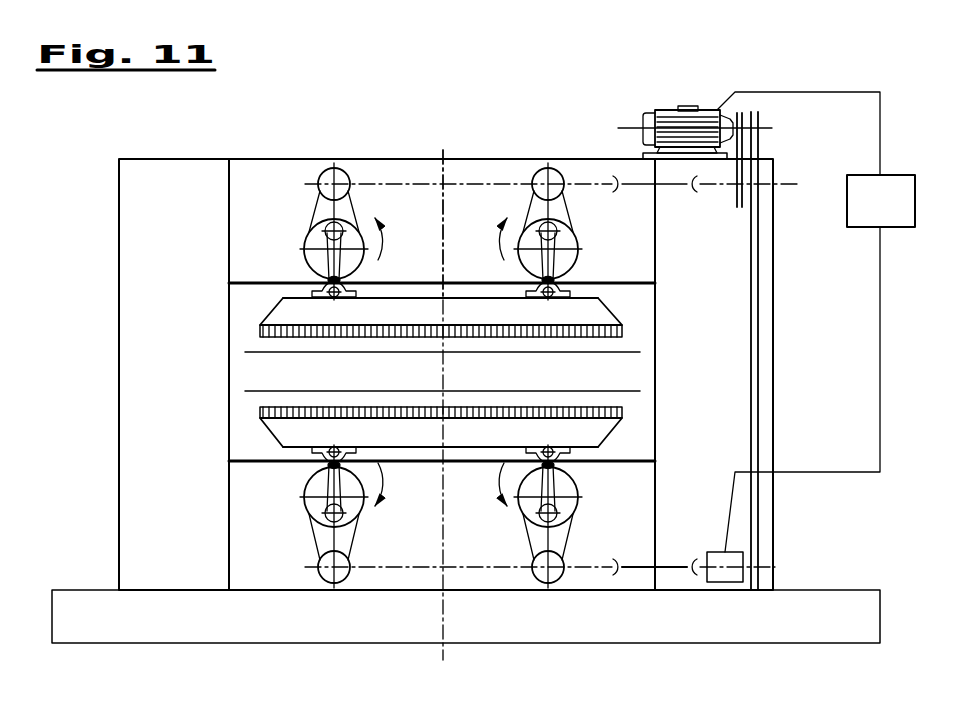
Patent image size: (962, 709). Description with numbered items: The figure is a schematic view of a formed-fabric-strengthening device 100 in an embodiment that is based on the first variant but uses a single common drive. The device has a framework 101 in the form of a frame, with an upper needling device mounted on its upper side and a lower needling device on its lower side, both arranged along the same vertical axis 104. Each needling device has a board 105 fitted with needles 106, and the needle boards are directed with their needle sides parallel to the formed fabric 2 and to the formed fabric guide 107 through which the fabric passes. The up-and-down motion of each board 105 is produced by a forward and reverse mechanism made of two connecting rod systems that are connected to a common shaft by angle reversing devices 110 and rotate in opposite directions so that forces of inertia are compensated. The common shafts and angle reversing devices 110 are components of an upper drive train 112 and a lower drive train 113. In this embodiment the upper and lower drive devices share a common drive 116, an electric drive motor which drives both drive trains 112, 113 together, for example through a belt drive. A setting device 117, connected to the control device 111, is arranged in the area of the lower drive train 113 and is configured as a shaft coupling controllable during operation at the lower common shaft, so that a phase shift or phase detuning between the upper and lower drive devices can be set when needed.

The formed-fabric-strengthening device 100 is at (427, 140).
The framework 101 is at (257, 185).
The vertical axis 104 is at (469, 209).
The board 105 is at (290, 302).
The needles 106 is at (270, 330).
The formed fabric guide 107 is at (692, 372).
The angle reversing devices 110 is at (347, 176).
The control device 111 is at (816, 322).
The upper drive train 112 is at (676, 197).
The lower drive train 113 is at (640, 572).
The common drive 116 is at (705, 120).
The setting device 117 is at (733, 561).
The formed fabric 2 is at (610, 373).